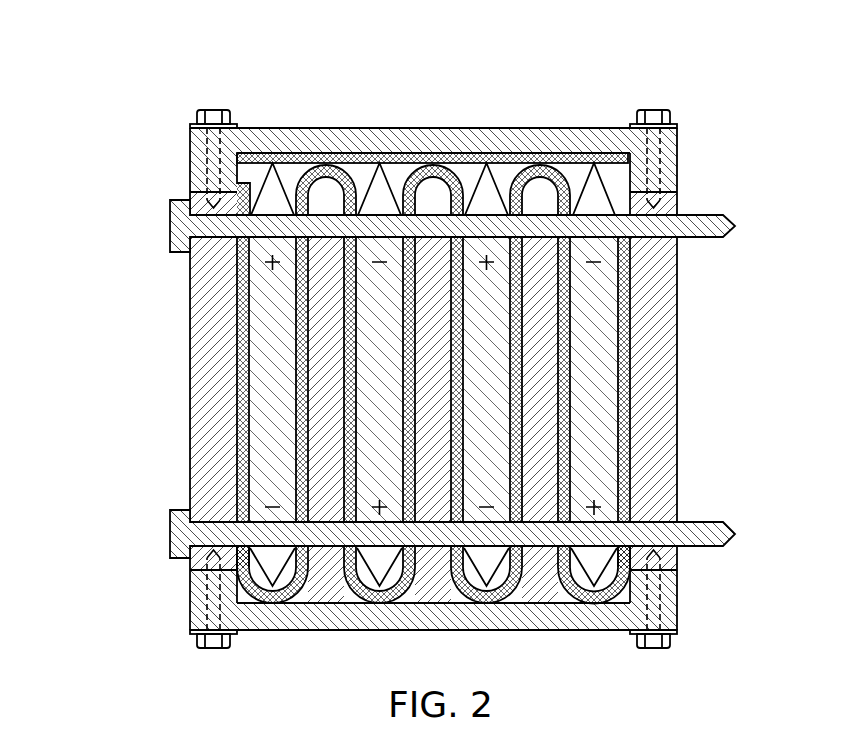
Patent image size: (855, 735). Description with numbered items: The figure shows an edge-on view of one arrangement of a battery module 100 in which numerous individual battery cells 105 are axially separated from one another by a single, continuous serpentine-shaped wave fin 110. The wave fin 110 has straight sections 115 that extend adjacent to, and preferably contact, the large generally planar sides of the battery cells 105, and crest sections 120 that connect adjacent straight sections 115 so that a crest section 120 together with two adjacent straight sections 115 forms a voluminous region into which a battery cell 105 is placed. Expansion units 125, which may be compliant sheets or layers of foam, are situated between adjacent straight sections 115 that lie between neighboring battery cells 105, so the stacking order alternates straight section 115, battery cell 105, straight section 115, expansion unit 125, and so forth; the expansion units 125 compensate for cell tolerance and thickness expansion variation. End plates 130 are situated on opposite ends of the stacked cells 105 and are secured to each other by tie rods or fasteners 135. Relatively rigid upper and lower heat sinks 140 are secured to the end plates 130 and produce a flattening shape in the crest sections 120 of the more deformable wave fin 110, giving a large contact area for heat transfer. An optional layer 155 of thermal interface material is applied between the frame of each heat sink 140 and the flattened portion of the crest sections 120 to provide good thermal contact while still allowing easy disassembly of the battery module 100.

The battery module 100 is at (76, 102).
The battery cell 105 is at (272, 163).
The wave fin 110 is at (702, 391).
The straight section 115 is at (296, 378).
The crest section 120 is at (326, 165).
The expansion unit 125 is at (326, 525).
The end plate 130 is at (190, 333).
The tie rod/fastener 135 is at (170, 223).
The heat sink 140 is at (192, 158).
The layer of thermal interface material 155 is at (620, 158).